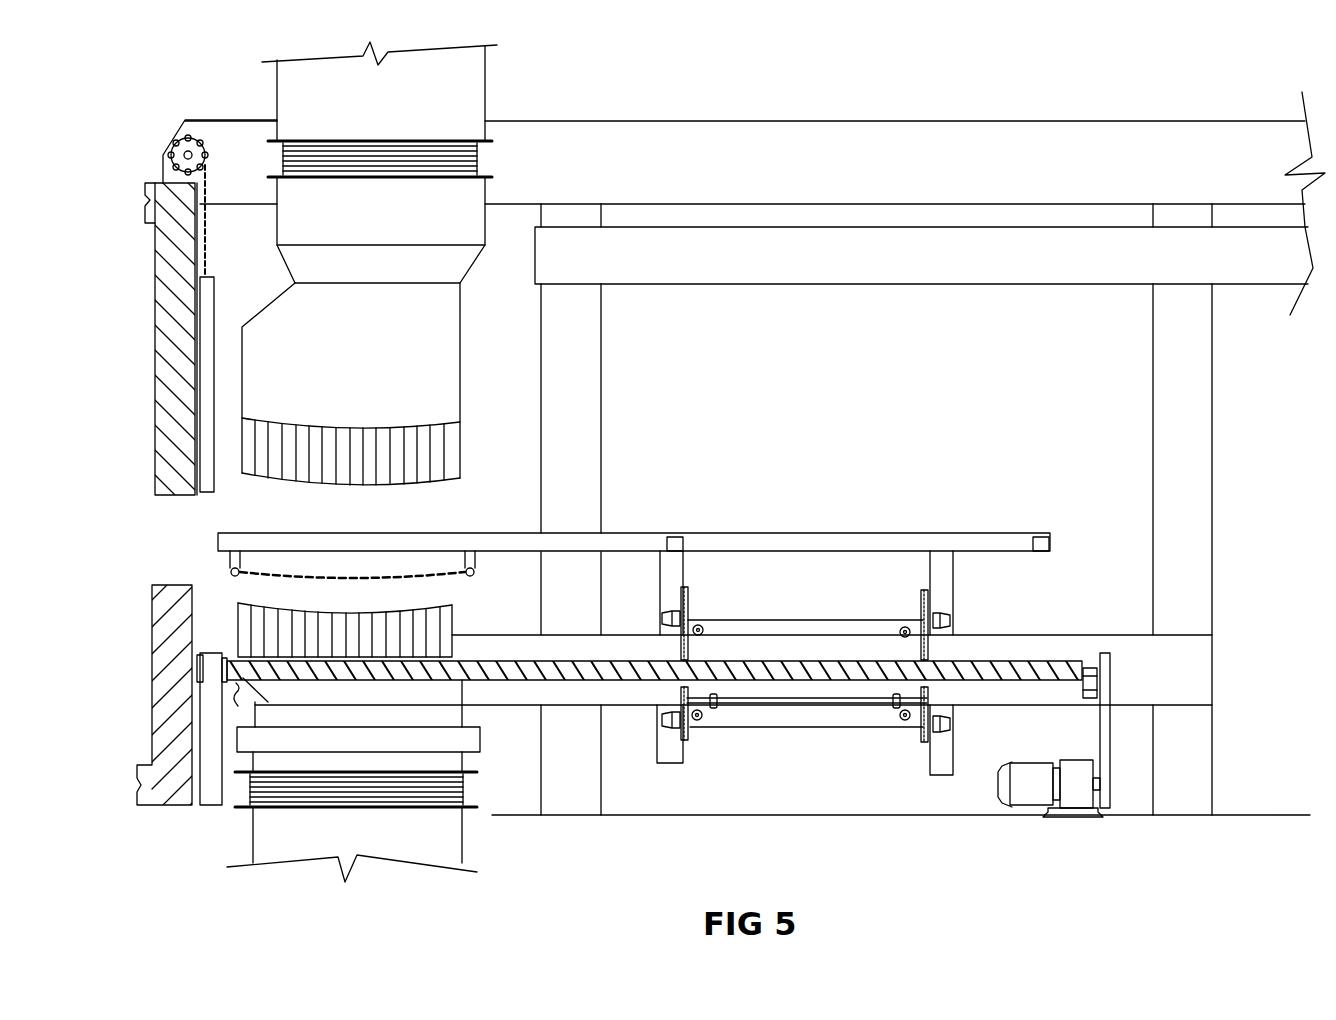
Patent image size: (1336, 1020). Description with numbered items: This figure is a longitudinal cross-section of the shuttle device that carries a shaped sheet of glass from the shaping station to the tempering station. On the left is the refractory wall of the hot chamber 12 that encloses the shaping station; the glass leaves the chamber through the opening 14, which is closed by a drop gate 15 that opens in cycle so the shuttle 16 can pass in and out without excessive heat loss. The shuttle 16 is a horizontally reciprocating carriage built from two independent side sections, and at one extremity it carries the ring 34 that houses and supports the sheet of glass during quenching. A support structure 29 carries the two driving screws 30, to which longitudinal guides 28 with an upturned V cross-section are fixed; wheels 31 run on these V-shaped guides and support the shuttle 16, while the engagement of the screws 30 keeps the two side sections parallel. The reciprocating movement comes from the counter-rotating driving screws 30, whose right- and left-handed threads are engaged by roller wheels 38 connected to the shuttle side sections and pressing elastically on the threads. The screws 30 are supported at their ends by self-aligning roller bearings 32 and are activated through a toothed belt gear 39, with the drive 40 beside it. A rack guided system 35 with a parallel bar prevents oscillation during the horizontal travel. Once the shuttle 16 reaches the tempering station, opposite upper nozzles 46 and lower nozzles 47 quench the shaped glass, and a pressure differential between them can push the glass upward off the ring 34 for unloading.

The hot chamber 12 is at (155, 677).
The opening 14 is at (183, 497).
The drop gate 15 is at (205, 316).
The shuttle 16 is at (920, 533).
The longitudinal guides 28 is at (1025, 642).
The support structure 29 is at (601, 457).
The driving screws 30 is at (614, 683).
The wheels 31 is at (702, 628).
The self-aligning roller bearings 32 is at (225, 655).
The ring 34 is at (450, 577).
The rack guided system 35 is at (820, 703).
The roller wheels 38 is at (705, 672).
The toothed belt gear 39 is at (1103, 723).
The motor 40 is at (1077, 790).
The upper nozzles 46 is at (445, 453).
The lower nozzles 47 is at (445, 642).